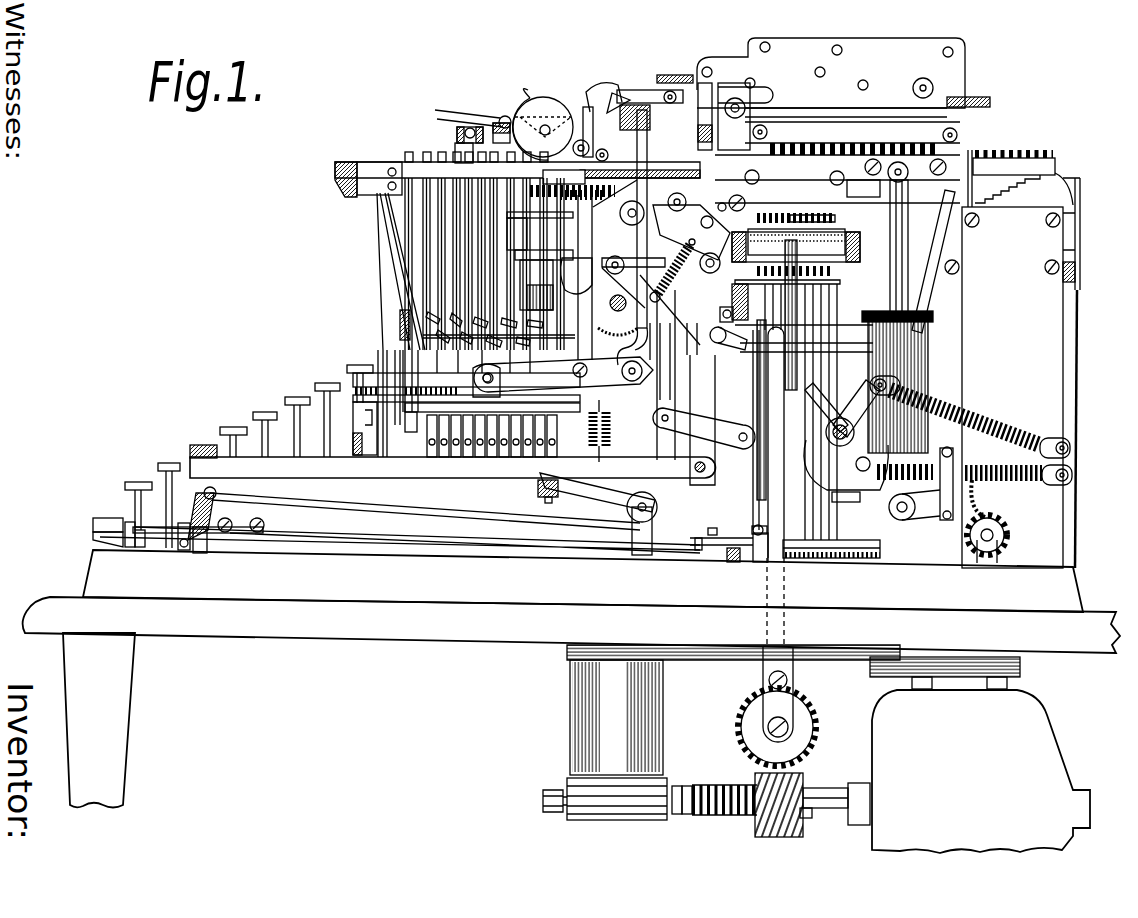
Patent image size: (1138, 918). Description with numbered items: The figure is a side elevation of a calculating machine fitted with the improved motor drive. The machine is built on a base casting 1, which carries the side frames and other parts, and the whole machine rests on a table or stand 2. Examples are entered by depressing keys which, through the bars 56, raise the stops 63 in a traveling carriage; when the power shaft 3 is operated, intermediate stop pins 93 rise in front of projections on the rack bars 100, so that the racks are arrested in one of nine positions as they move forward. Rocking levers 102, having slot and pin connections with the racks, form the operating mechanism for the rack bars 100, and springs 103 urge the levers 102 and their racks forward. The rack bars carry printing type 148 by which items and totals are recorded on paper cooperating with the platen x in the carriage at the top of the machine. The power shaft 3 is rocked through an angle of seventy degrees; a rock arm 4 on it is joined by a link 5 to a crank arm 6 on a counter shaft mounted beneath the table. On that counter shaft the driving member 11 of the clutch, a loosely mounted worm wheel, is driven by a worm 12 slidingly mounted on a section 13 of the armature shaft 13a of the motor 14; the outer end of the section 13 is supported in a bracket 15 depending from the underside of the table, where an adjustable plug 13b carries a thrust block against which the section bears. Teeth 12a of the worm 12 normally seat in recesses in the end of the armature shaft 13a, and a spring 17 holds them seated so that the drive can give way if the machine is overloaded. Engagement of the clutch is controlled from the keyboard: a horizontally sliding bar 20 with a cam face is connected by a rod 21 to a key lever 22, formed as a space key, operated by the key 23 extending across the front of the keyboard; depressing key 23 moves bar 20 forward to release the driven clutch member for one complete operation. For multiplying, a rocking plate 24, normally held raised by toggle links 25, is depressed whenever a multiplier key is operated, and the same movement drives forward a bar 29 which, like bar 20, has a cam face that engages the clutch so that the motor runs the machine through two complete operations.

The base casting 1 is at (583, 581).
The table or stand 2 is at (571, 702).
The power shaft 3 is at (846, 435).
The rock arm 4 is at (833, 402).
The link 5 is at (768, 410).
The crank arm 6 is at (790, 715).
The driving member of the clutch 11 is at (740, 725).
The worm 12 is at (812, 790).
The teeth of the worm 12a is at (828, 820).
The section of armature shaft 13 is at (735, 810).
The armature shaft 13a is at (828, 790).
The adjustable plug 13b is at (560, 812).
The motor 14 is at (980, 755).
The bracket 15 is at (733, 732).
The spring 17 is at (718, 784).
The horizontally sliding bar 20 is at (730, 560).
The rod 21 is at (470, 517).
The key lever 22 is at (205, 516).
The key 23 is at (103, 517).
The rocking plate 24 is at (850, 502).
The toggle links 25 is at (948, 505).
The bar 29 is at (835, 560).
The bars 56 is at (732, 292).
The stops 63 is at (838, 268).
The intermediate stop pins 93 is at (781, 215).
The rack bars 100 is at (1020, 178).
The rocking levers 102 is at (928, 287).
The springs 103 is at (845, 360).
The printing type 148 is at (517, 174).
The platen x is at (545, 103).